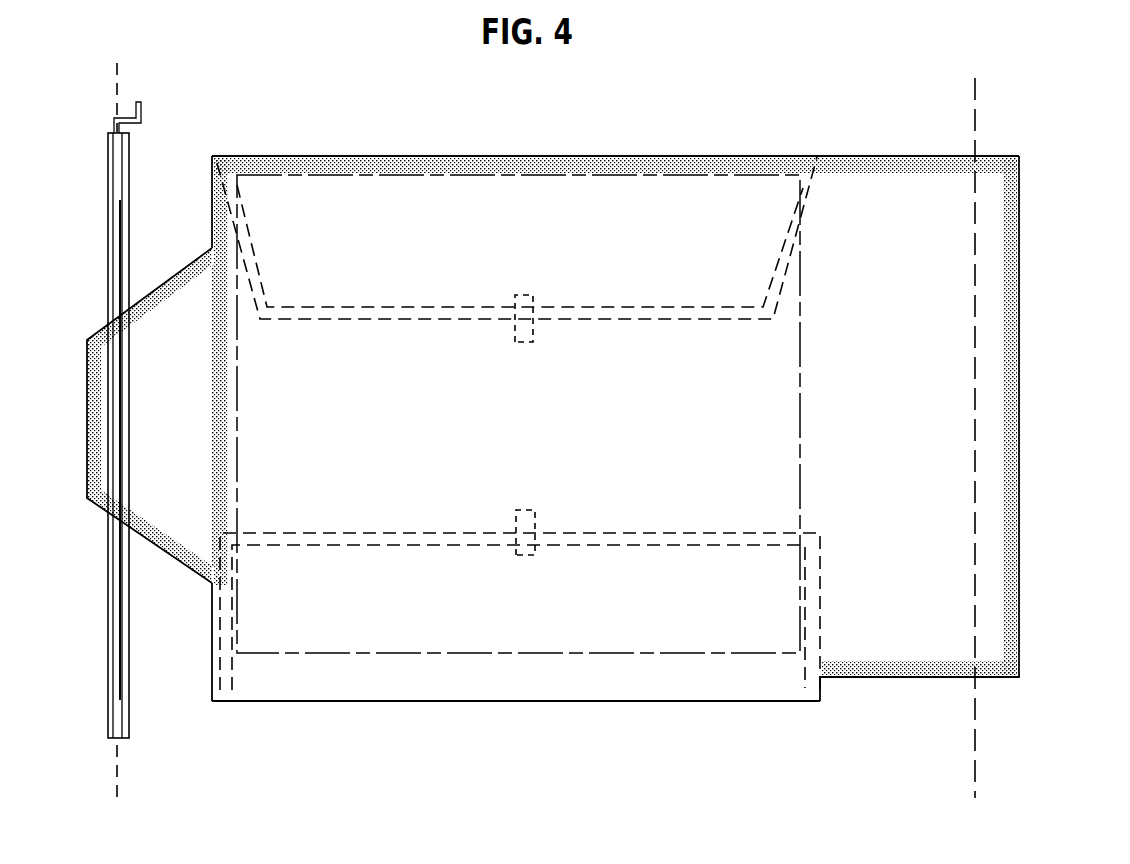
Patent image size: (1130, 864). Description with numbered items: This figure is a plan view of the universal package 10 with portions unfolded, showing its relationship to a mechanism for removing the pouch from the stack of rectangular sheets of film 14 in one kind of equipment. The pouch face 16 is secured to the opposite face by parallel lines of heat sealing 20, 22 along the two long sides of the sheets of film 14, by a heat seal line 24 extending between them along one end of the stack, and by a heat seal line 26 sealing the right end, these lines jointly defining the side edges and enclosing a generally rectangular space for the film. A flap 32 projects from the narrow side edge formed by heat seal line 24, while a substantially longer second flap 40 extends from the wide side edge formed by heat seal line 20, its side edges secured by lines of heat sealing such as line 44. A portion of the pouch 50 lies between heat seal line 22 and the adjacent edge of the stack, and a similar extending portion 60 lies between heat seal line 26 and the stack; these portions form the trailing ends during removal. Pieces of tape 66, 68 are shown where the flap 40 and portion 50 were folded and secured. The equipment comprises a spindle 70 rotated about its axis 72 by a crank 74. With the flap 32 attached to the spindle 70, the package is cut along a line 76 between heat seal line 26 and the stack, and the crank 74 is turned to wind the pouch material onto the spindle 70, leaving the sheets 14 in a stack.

The universal package 10 is at (871, 746).
The sheets of film 14 is at (805, 393).
The face of the pouch 16 is at (652, 444).
The line of heat sealing 20 is at (566, 163).
The line of heat sealing 22 is at (367, 535).
The heat seal line 24 is at (212, 667).
The heat seal line 26 is at (1020, 388).
The flap 32 is at (150, 432).
The second flap 40 is at (777, 214).
The line of heat sealing 44 is at (674, 320).
The portion of the pouch 50 is at (413, 678).
The extending portion of the pouch 60 is at (985, 300).
The piece of tape 66 is at (523, 327).
The piece of tape 68 is at (543, 510).
The spindle 70 is at (115, 198).
The axis 72 is at (113, 771).
The crank 74 is at (143, 104).
The cutting line 76 is at (982, 106).